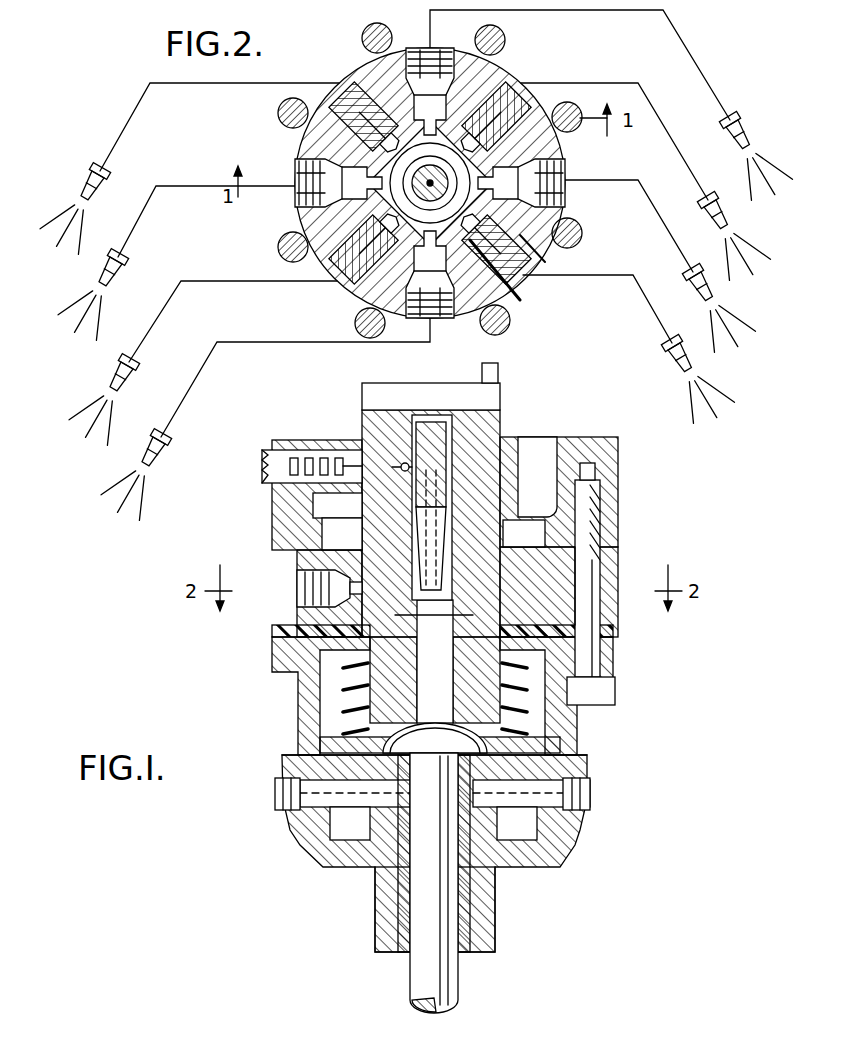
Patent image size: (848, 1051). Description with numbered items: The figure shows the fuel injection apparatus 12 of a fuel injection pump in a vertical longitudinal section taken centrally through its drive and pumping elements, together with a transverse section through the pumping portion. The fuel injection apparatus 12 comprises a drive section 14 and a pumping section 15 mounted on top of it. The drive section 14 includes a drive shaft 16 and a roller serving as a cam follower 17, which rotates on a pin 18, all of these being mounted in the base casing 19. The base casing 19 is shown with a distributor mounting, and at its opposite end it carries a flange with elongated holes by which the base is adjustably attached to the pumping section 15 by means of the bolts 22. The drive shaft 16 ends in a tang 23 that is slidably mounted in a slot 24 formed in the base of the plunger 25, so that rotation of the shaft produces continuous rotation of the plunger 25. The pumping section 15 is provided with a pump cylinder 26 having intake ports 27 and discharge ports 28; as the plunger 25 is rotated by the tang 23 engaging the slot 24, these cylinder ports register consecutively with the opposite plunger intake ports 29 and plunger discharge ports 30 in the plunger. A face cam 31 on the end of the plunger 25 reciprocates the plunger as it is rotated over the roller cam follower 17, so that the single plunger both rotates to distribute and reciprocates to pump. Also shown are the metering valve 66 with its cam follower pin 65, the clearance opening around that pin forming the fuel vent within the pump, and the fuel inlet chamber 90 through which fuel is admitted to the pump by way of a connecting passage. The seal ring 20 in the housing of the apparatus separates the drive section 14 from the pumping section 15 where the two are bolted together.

In FIG. 1, the fuel injection apparatus 12 is at (620, 533).
In FIG. 1, the drive section 14 is at (500, 893).
In FIG. 2, the pumping section 15 is at (312, 152).
In FIG. 1, the pumping section 15 is at (557, 606).
In FIG. 1, the drive shaft 16 is at (450, 985).
In FIG. 1, the cam follower 17 is at (345, 763).
In FIG. 1, the pin 18 is at (300, 815).
In FIG. 1, the base casing 19 is at (557, 740).
In FIG. 1, the housing gasket 20 is at (270, 657).
In FIG. 2, the bolts 22 is at (505, 43).
In FIG. 1, the bolts 22 is at (593, 580).
In FIG. 1, the tang 23 is at (425, 745).
In FIG. 1, the slot 24 is at (480, 745).
In FIG. 2, the plunger 25 is at (560, 255).
In FIG. 1, the plunger 25 is at (345, 673).
In FIG. 1, the pump cylinder 26 is at (585, 533).
In FIG. 1, the intake ports 27 is at (505, 445).
In FIG. 2, the discharge ports 28 is at (300, 200).
In FIG. 1, the discharge ports 28 is at (345, 586).
In FIG. 1, the plunger intake ports 29 is at (490, 475).
In FIG. 1, the plunger discharge ports 30 is at (297, 552).
In FIG. 1, the face cam 31 is at (565, 820).
In FIG. 1, the cam follower pin 65 is at (499, 372).
In FIG. 2, the metering valve 66 is at (540, 210).
In FIG. 1, the metering valve 66 is at (430, 430).
In FIG. 1, the fuel inlet chamber 90 is at (540, 462).